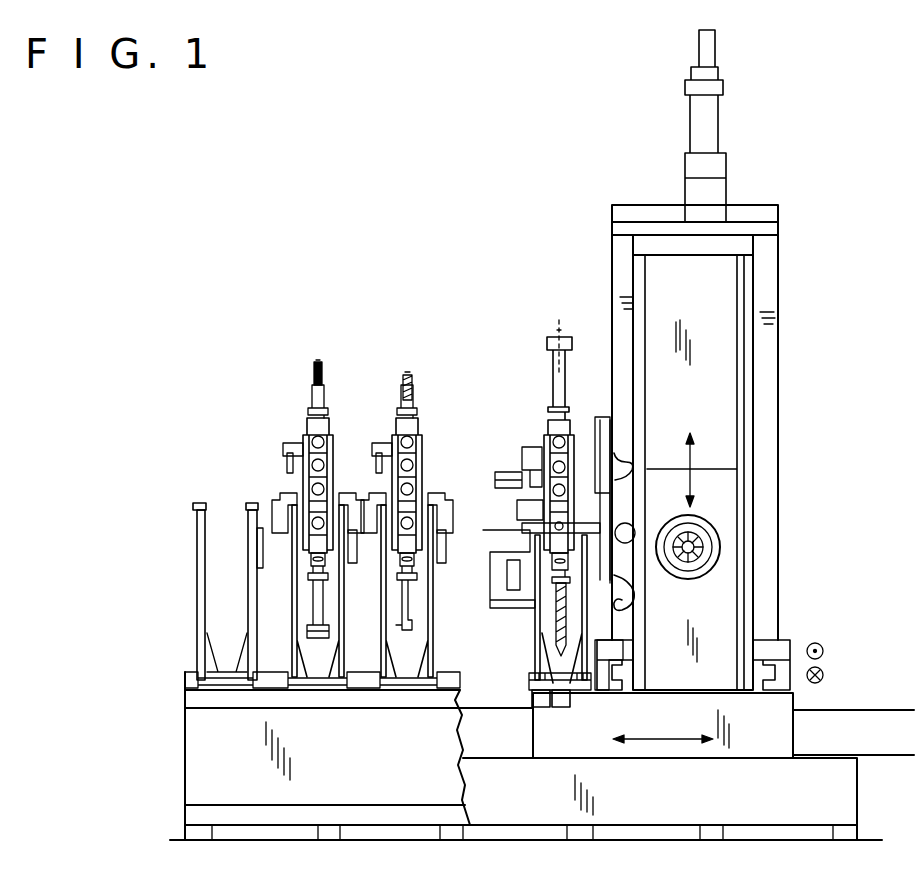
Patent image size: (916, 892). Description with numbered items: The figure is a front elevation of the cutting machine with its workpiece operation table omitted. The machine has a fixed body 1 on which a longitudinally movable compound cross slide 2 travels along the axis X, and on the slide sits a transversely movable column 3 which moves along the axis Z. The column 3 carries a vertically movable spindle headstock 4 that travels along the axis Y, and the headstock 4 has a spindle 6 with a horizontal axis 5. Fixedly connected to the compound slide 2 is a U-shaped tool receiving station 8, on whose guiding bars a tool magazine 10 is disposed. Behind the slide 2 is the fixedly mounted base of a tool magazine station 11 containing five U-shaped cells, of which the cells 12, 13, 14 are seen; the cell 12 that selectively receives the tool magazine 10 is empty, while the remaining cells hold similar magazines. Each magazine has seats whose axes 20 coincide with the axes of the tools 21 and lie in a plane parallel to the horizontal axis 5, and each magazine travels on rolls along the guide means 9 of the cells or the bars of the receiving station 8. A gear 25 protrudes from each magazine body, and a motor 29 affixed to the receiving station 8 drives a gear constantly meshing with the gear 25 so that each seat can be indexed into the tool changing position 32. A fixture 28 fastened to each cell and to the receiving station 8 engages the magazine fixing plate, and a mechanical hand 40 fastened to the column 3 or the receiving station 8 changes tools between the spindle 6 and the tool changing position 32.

The fixed body 1 is at (840, 798).
The compound cross slide 2 is at (783, 707).
The transversely movable column 3 is at (775, 292).
The spindle headstock 4 is at (717, 497).
The horizontal axis 5 is at (700, 545).
The spindle 6 is at (700, 551).
The receiving station 8 is at (538, 648).
The guide means 9 is at (196, 500).
The tool magazine 10 is at (548, 425).
The tool magazine station 11 is at (187, 720).
The cell 12 is at (186, 569).
The cell 13 is at (307, 422).
The cell 14 is at (396, 422).
The axes of seats 20 is at (557, 335).
The tools 21 is at (312, 378).
The gear 25 is at (287, 466).
The fixture 28 is at (263, 560).
The motor 29 is at (495, 478).
The tool changing position 32 is at (545, 525).
The mechanical hand 40 is at (637, 588).